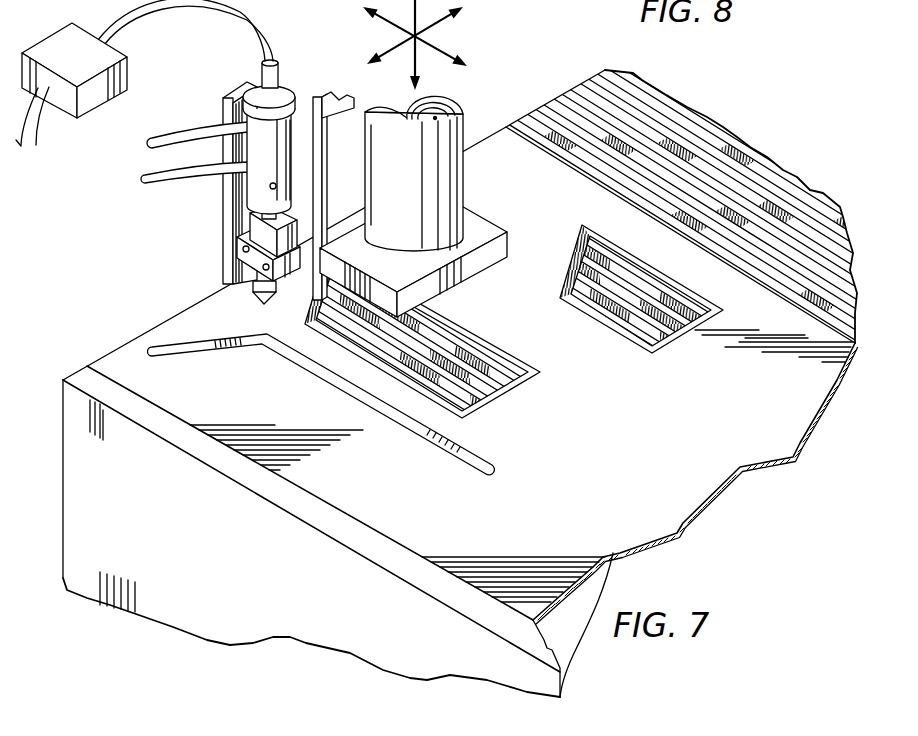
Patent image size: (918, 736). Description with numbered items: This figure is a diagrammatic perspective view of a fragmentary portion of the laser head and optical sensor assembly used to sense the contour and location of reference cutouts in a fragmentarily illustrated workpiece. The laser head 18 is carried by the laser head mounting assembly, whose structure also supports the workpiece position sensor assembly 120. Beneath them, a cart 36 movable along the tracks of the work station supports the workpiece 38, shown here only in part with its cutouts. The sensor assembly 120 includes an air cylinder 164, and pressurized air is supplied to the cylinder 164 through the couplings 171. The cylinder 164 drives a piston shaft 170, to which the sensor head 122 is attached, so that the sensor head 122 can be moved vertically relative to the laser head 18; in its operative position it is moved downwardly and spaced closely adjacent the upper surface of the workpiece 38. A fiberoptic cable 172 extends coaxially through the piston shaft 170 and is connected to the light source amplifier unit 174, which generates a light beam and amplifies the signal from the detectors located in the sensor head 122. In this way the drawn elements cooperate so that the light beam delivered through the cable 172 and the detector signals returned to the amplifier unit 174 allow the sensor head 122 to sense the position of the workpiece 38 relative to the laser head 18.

The laser head 18 is at (482, 165).
The cart 36 is at (102, 365).
The workpiece 38 is at (590, 383).
The workpiece position sensor assembly 120 is at (230, 267).
The sensor head 122 is at (265, 303).
The air cylinder 164 is at (220, 204).
The piston shaft 170 is at (273, 78).
The couplings 171 is at (220, 204).
The fiberoptic cable 172 is at (266, 34).
The light source amplifier unit 174 is at (77, 50).